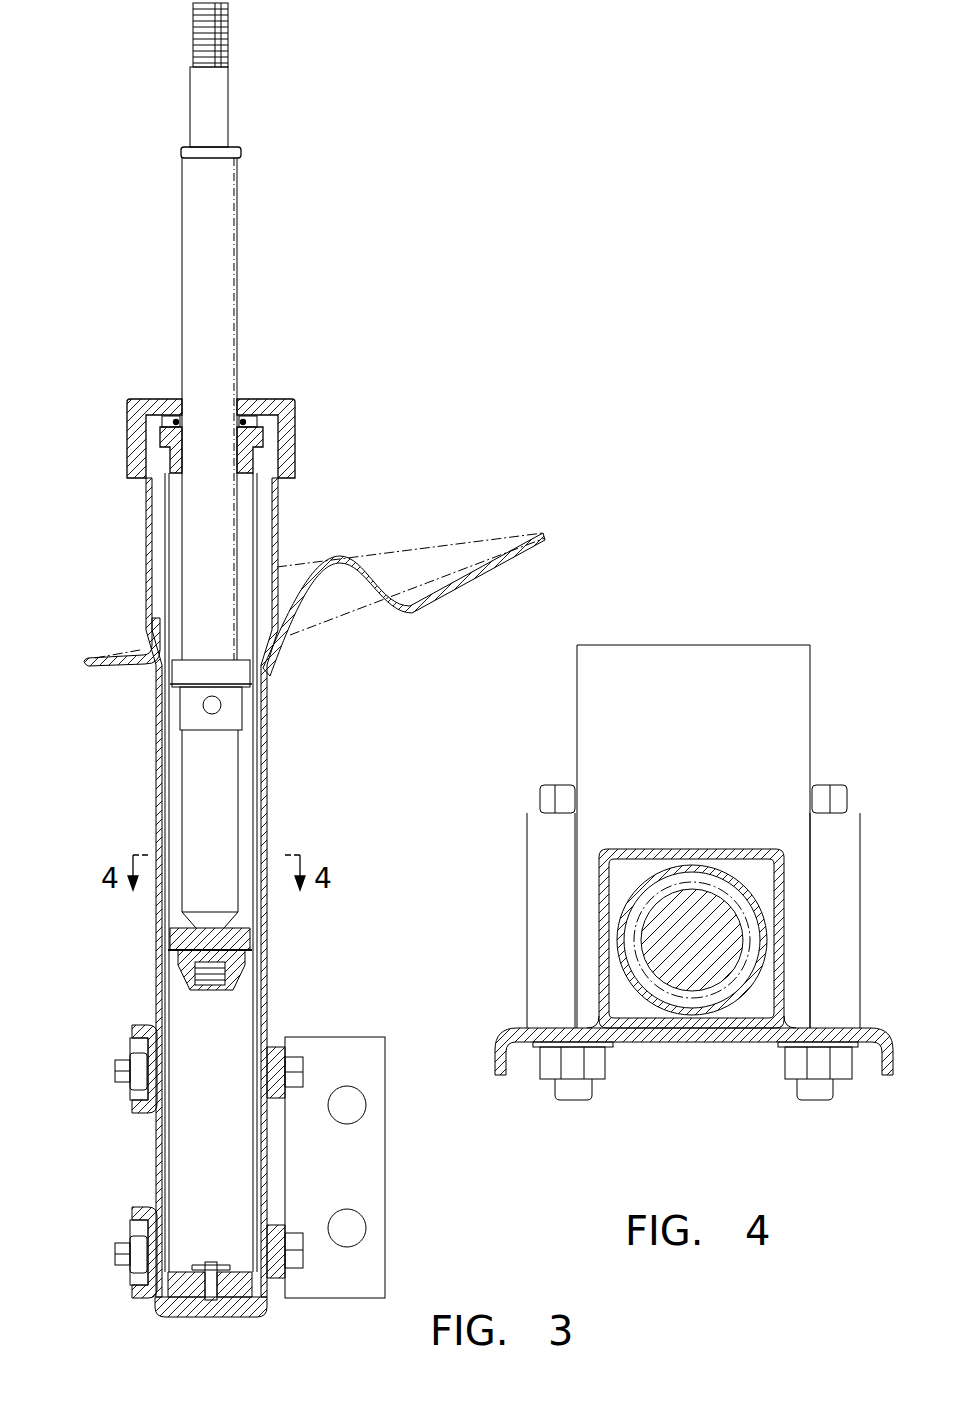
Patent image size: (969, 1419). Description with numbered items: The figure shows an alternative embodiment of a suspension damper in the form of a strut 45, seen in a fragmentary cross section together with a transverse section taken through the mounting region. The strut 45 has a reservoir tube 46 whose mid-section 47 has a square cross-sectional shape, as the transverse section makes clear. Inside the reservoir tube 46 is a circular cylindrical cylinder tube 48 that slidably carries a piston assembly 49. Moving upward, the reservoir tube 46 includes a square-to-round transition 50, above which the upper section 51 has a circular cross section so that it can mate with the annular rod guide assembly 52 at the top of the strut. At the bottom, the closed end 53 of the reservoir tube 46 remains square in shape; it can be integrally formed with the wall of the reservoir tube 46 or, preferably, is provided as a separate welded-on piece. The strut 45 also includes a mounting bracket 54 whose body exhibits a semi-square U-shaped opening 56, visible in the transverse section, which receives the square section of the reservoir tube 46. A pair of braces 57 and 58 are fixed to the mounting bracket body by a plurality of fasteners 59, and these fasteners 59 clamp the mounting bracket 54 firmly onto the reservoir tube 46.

In FIG. 3, the strut 45 is at (279, 762).
In FIG. 3, the reservoir tube 46 is at (265, 797).
In FIG. 4, the reservoir tube 46 is at (740, 1028).
In FIG. 3, the mid-section 47 is at (267, 820).
In FIG. 3, the cylinder tube 48 is at (258, 698).
In FIG. 3, the piston assembly 49 is at (248, 940).
In FIG. 3, the square-to-round transition 50 is at (152, 655).
In FIG. 3, the upper section 51 is at (277, 495).
In FIG. 3, the rod guide assembly 52 is at (262, 428).
In FIG. 3, the closed end 53 is at (255, 1305).
In FIG. 3, the mounting bracket 54 is at (348, 1037).
In FIG. 4, the semi-square U-shaped opening 56 is at (628, 1018).
In FIG. 3, the brace 57 is at (140, 1115).
In FIG. 3, the brace 58 is at (130, 1296).
In FIG. 4, the fasteners 59 is at (566, 1100).